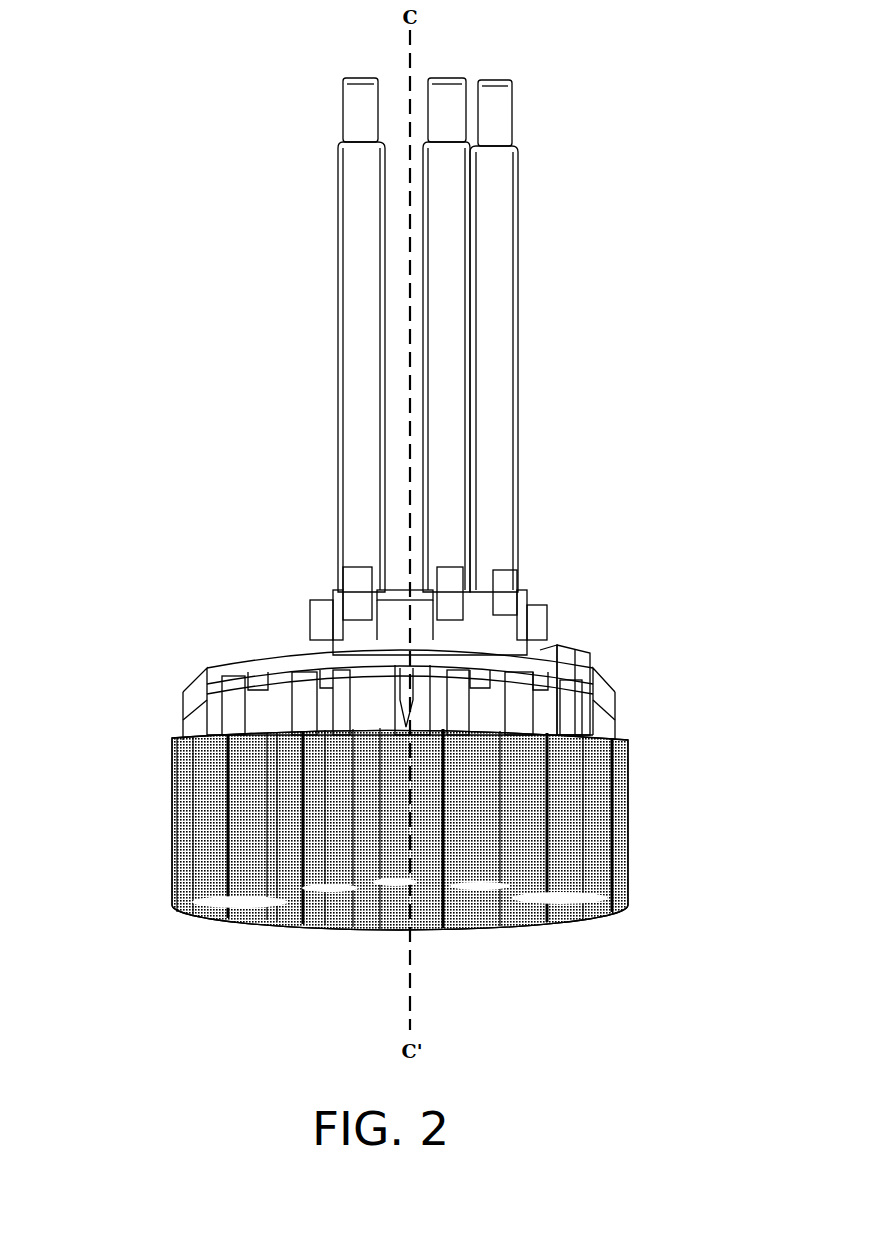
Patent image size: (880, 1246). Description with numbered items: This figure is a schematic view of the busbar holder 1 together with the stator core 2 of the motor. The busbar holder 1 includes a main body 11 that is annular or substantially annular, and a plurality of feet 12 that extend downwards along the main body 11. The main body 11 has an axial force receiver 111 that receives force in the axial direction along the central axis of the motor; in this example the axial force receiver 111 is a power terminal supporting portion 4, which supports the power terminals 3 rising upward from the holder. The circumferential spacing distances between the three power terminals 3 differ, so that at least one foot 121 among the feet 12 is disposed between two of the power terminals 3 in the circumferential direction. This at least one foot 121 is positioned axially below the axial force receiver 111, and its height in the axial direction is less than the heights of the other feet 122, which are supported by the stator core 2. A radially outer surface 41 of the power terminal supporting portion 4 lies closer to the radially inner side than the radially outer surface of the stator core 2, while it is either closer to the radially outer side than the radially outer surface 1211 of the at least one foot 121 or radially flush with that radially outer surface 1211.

The busbar holder 1 is at (388, 553).
The main body 11 is at (268, 646).
The axial force receiver 111 is at (288, 510).
The power terminal supporting portion 4 is at (343, 630).
The radially outer surface of the power terminal supporting portion 41 is at (388, 606).
The feet 12 is at (477, 611).
The at least one foot 121 is at (528, 611).
The radially outer surface of the at least one foot 1211 is at (410, 688).
The other feet 122 is at (584, 698).
The stator core 2 is at (173, 741).
The power terminals 3 is at (352, 389).